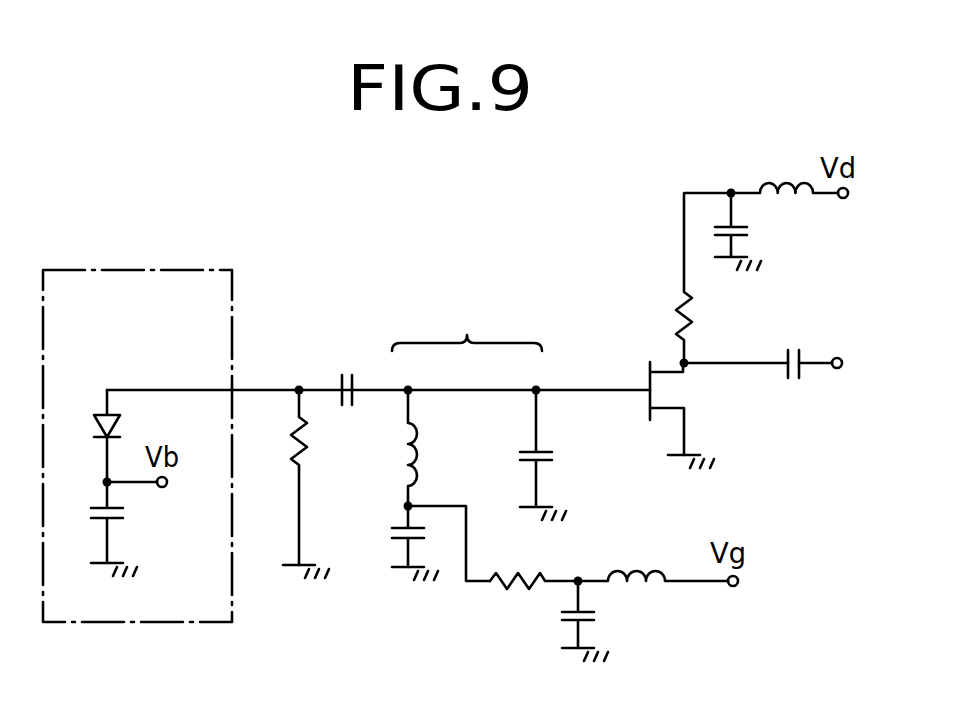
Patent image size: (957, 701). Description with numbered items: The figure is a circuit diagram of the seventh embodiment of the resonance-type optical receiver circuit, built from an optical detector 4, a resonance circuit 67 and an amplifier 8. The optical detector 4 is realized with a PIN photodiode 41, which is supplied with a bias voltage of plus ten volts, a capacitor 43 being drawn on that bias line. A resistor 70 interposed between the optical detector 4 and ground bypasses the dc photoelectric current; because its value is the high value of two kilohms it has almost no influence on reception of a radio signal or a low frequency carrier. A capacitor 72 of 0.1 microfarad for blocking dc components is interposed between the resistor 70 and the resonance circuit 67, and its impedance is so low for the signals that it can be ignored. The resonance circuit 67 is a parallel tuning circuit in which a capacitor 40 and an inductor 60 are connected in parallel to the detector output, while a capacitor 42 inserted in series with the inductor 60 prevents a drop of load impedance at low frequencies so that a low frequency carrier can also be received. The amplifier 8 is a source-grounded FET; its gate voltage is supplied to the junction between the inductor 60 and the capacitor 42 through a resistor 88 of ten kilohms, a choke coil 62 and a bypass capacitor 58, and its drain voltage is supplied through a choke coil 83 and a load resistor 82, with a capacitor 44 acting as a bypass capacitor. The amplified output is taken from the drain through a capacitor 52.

The optical detector 4 is at (185, 268).
The PIN photodiode 41 is at (97, 412).
The bias capacitor 43 is at (125, 516).
The resistor 70 is at (306, 457).
The capacitor 72 is at (348, 371).
The resonance circuit 67 is at (467, 322).
The inductor 60 is at (419, 451).
The capacitor 42 is at (393, 534).
The capacitor 40 is at (558, 458).
The amplifier 8 is at (665, 366).
The load resistor 82 is at (700, 312).
The choke coil 83 is at (780, 186).
The capacitor 44 is at (750, 231).
The output coupling capacitor 52 is at (792, 385).
The resistor 88 is at (520, 589).
The bypass capacitor 58 is at (594, 615).
The choke coil 62 is at (661, 590).